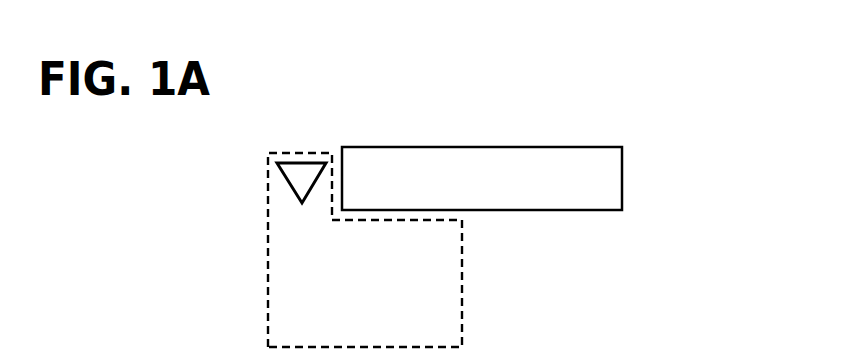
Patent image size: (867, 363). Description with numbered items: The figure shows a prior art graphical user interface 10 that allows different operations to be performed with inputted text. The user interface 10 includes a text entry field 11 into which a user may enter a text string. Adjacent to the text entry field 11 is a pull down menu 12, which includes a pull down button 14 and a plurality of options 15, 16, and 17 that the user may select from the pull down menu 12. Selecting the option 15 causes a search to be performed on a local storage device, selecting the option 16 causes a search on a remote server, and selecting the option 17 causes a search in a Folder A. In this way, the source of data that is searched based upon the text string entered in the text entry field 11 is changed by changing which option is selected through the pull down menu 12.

The user interface 10 is at (650, 120).
The text entry field 11 is at (583, 198).
The pull down menu 12 is at (254, 257).
The pull down button 14 is at (297, 175).
The option 15 is at (373, 260).
The option 16 is at (377, 291).
The option 17 is at (393, 321).